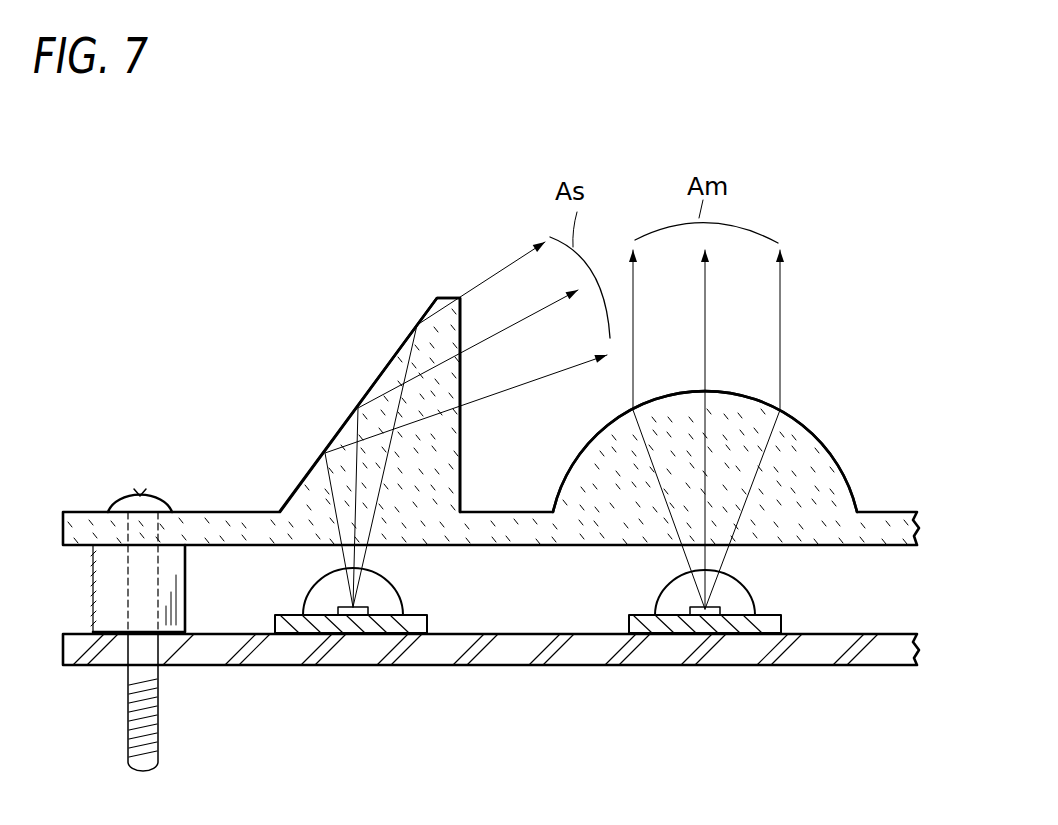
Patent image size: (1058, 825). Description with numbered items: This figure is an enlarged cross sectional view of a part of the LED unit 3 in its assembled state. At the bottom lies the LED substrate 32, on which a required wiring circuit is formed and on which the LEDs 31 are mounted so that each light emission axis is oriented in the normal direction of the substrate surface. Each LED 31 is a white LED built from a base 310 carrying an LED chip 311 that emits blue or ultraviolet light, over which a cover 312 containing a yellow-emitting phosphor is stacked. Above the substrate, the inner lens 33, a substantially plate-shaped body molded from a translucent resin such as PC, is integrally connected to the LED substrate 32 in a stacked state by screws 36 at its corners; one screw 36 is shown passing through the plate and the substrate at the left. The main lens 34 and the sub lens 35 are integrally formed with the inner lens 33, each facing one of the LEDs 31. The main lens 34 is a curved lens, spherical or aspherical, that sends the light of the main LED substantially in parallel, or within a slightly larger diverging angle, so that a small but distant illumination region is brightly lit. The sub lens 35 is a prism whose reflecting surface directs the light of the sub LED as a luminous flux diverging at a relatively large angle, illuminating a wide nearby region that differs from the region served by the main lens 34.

The LED unit 3 is at (252, 370).
The LED 31 is at (506, 645).
The base 310 is at (420, 622).
The LED chip 311 is at (367, 605).
The cover 312 is at (327, 585).
The LED substrate 32 is at (880, 655).
The inner lens 33 is at (887, 515).
The main lens 34 is at (803, 425).
The sub lens 35 is at (408, 337).
The screw 36 is at (141, 493).